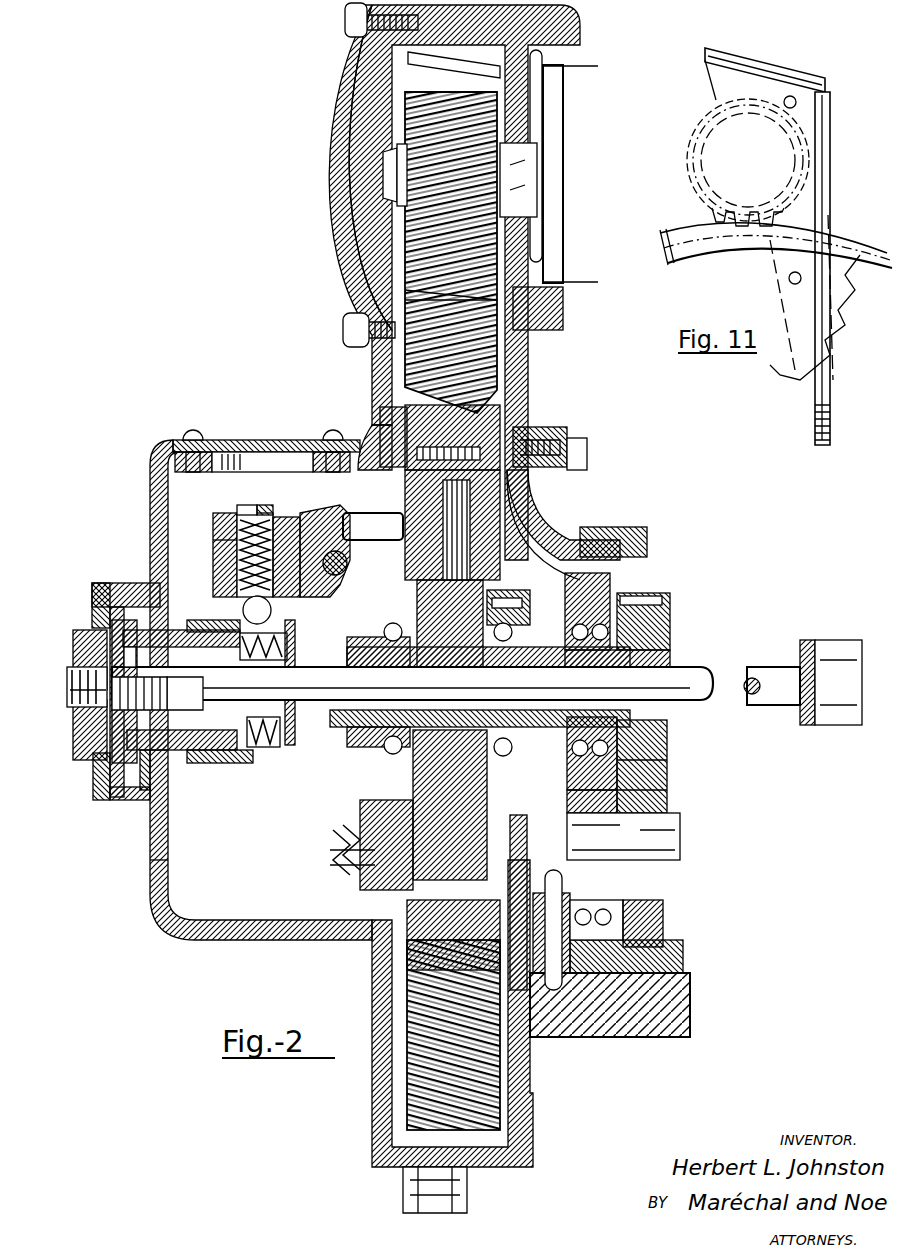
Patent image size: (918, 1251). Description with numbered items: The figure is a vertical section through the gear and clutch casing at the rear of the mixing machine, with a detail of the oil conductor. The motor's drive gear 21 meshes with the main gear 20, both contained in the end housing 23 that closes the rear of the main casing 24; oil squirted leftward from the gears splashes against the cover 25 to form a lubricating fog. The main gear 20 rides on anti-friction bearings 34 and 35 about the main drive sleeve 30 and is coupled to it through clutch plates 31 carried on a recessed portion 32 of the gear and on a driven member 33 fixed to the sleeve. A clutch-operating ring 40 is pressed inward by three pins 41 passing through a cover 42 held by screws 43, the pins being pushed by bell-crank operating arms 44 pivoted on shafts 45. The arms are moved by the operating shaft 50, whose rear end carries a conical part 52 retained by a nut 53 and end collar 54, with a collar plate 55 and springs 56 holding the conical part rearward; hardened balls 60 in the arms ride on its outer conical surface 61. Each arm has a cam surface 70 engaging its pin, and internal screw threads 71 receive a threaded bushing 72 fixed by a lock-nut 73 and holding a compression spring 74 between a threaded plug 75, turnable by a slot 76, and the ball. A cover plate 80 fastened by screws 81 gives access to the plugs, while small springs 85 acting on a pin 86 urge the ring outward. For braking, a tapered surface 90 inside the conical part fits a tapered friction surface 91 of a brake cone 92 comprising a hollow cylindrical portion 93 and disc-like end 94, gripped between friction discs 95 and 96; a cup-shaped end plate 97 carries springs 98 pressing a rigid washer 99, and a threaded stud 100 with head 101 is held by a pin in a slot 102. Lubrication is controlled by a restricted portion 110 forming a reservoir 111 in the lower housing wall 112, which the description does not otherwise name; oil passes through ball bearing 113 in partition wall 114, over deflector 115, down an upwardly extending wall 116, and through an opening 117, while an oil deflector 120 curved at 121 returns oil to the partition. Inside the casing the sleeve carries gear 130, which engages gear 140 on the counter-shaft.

In FIG. 2, the main gear 20 is at (408, 290).
In FIG. 11, the main gear 20 is at (695, 262).
In FIG. 2, the drive gear 21 is at (405, 95).
In FIG. 11, the drive gear 21 is at (718, 155).
In FIG. 2, the end housing 23 is at (395, 400).
In FIG. 2, the main casing 24 is at (590, 560).
In FIG. 2, the cover 25 is at (333, 155).
In FIG. 2, the main drive sleeve 30 is at (655, 600).
In FIG. 2, the clutch plates 31 is at (560, 495).
In FIG. 2, the recessed portion 32 is at (560, 485).
In FIG. 2, the driven member 33 is at (570, 545).
In FIG. 2, the anti-friction bearing 34 is at (384, 632).
In FIG. 2, the anti-friction bearing 35 is at (513, 630).
In FIG. 2, the clutch-operating ring 40 is at (372, 448).
In FIG. 2, the pins 41 is at (390, 450).
In FIG. 2, the cover 42 is at (330, 448).
In FIG. 2, the screws 43 is at (415, 450).
In FIG. 2, the bell-crank operating arms 44 is at (213, 540).
In FIG. 2, the shafts 45 is at (325, 580).
In FIG. 2, the operating shaft 50 is at (690, 667).
In FIG. 2, the conical part 52 is at (152, 880).
In FIG. 2, the nut 53 is at (185, 630).
In FIG. 2, the end collar 54 is at (210, 632).
In FIG. 2, the collar plate 55 is at (293, 745).
In FIG. 2, the springs 56 is at (270, 755).
In FIG. 2, the hardened ball 60 is at (271, 612).
In FIG. 2, the outer conical surface 61 is at (247, 760).
In FIG. 2, the cam surface 70 is at (333, 530).
In FIG. 2, the internal screw threads 71 is at (213, 555).
In FIG. 2, the threaded bushing 72 is at (232, 520).
In FIG. 2, the lock-nut 73 is at (290, 507).
In FIG. 2, the compression spring 74 is at (270, 575).
In FIG. 2, the threaded plug 75 is at (247, 513).
In FIG. 2, the slot 76 is at (262, 513).
In FIG. 2, the cover plate 80 is at (243, 445).
In FIG. 2, the screws 81 is at (190, 432).
In FIG. 2, the small springs 85 is at (360, 875).
In FIG. 2, the pin 86 is at (330, 862).
In FIG. 2, the tapered surface 90 is at (130, 800).
In FIG. 2, the tapered friction surface 91 is at (185, 745).
In FIG. 2, the brake cone 92 is at (110, 800).
In FIG. 2, the hollow cylindrical portion 93 is at (137, 730).
In FIG. 2, the disc-like end 94 is at (120, 598).
In FIG. 2, the friction disc 95 is at (100, 597).
In FIG. 2, the friction disc 96 is at (136, 662).
In FIG. 2, the cup-shaped end plate 97 is at (90, 628).
In FIG. 2, the springs 98 is at (90, 760).
In FIG. 2, the rigid washer 99 is at (92, 742).
In FIG. 2, the threaded stud 100 is at (70, 685).
In FIG. 2, the head 101 is at (136, 682).
In FIG. 2, the slot 102 is at (85, 708).
In FIG. 2, the restricted portion 110 is at (375, 1000).
In FIG. 2, the reservoir 111 is at (395, 1050).
In FIG. 2, the lower housing 112 is at (332, 940).
In FIG. 2, the ball bearing 113 is at (620, 740).
In FIG. 2, the partition wall 114 is at (630, 573).
In FIG. 2, the deflector 115 is at (600, 778).
In FIG. 2, the upwardly extending wall 116 is at (600, 860).
In FIG. 2, the opening 117 is at (630, 935).
In FIG. 2, the oil deflector 120 is at (478, 48).
In FIG. 11, the oil deflector 120 is at (820, 75).
In FIG. 2, the curved portion 121 is at (575, 520).
In FIG. 2, the gear 130 is at (645, 600).
In FIG. 2, the gear 140 is at (620, 800).